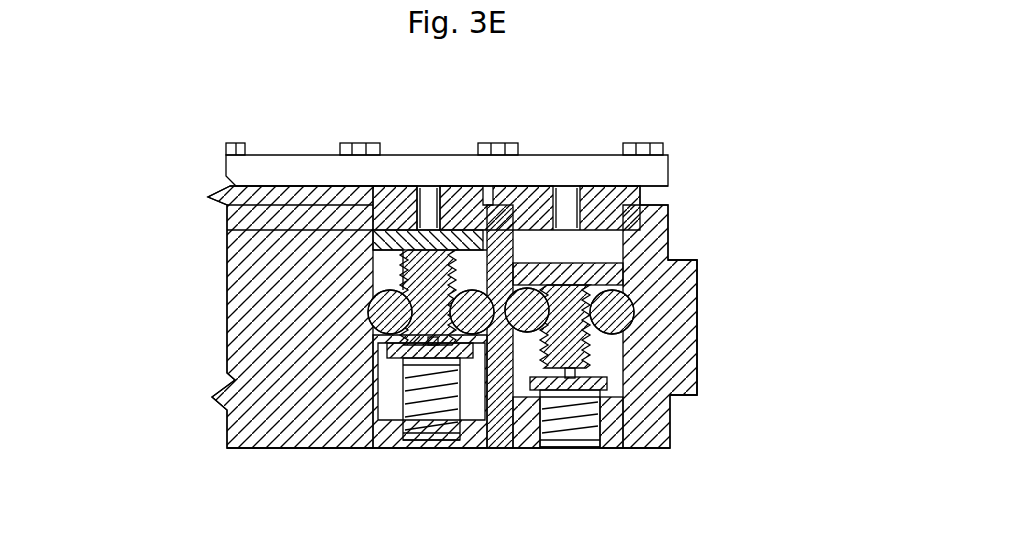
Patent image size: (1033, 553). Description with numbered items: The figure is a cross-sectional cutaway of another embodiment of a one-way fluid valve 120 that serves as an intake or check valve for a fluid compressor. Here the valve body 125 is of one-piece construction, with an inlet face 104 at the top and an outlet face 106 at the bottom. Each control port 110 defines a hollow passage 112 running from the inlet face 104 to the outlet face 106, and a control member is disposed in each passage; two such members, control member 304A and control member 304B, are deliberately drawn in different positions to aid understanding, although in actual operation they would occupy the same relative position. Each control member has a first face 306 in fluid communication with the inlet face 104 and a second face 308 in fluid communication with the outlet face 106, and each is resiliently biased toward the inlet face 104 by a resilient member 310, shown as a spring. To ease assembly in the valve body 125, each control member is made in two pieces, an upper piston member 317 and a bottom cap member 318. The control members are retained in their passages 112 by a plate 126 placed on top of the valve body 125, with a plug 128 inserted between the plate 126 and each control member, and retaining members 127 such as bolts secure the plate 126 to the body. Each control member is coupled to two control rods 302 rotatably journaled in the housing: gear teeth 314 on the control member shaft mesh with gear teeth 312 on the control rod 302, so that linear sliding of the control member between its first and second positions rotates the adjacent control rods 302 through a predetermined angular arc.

The one-way fluid valve 120 is at (191, 102).
The inlet face 104 is at (663, 148).
The outlet face 106 is at (670, 448).
The control port 110 is at (430, 186).
The hollow passage (cavity) 112 is at (400, 262).
The valve body 125 is at (683, 375).
The plate 126 is at (600, 200).
The retaining member 127 is at (345, 143).
The plug 128 is at (430, 200).
The control rod 302 is at (623, 282).
The control member (in first position) 304A is at (697, 400).
The control member (in second position) 304B is at (227, 213).
The first face 306 is at (320, 188).
The second face 308 is at (380, 413).
The resilient member 310 is at (447, 438).
The gear teeth of control rod 312 is at (373, 335).
The gear teeth of control member 314 is at (373, 305).
The upper piston member 317 is at (440, 240).
The bottom cap member 318 is at (380, 380).